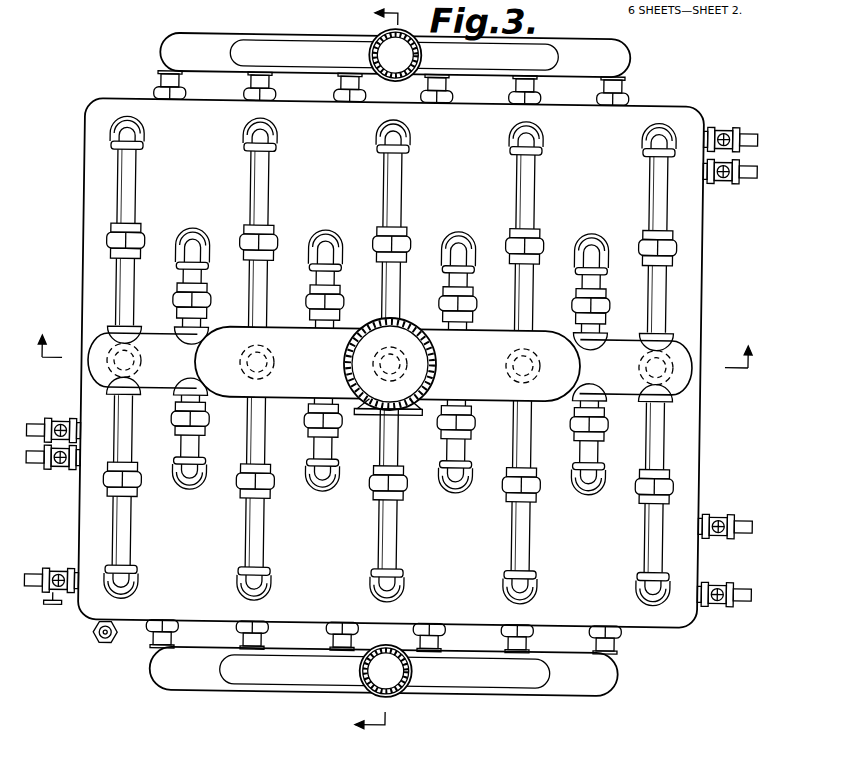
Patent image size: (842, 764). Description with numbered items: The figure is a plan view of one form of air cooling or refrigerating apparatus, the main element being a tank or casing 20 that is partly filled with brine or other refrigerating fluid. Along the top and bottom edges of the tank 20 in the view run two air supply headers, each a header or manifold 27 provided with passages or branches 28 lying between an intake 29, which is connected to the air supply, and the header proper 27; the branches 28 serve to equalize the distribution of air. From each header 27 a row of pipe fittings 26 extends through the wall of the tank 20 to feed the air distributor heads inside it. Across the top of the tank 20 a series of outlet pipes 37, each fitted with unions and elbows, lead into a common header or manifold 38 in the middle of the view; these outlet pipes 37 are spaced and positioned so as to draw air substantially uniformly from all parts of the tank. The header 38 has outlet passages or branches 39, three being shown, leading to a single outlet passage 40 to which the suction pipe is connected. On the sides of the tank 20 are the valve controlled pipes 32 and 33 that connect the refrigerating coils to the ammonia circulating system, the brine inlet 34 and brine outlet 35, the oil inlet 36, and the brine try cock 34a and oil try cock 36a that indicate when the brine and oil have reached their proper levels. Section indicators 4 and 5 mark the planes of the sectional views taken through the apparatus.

The tank or casing 20 is at (84, 213).
The pipe fitting 26 is at (248, 86).
The header or manifold 27 is at (196, 43).
The passages or branches 28 is at (272, 47).
The intake 29 is at (368, 44).
The valve controlled pipe 32 is at (744, 580).
The valve controlled pipe 33 is at (746, 179).
The brine inlet 34 is at (42, 594).
The brine try cock 34a is at (47, 428).
The brine outlet 35 is at (744, 134).
The oil inlet 36 is at (742, 518).
The oil try cock 36a is at (46, 463).
The outlet pipes 37 is at (192, 244).
The header or manifold 38 is at (163, 380).
The outlet passages or branches 39 is at (226, 334).
The outlet passage 40 is at (415, 370).
The section line 4- 4 is at (377, 378).
The section line 5- 5 is at (394, 356).